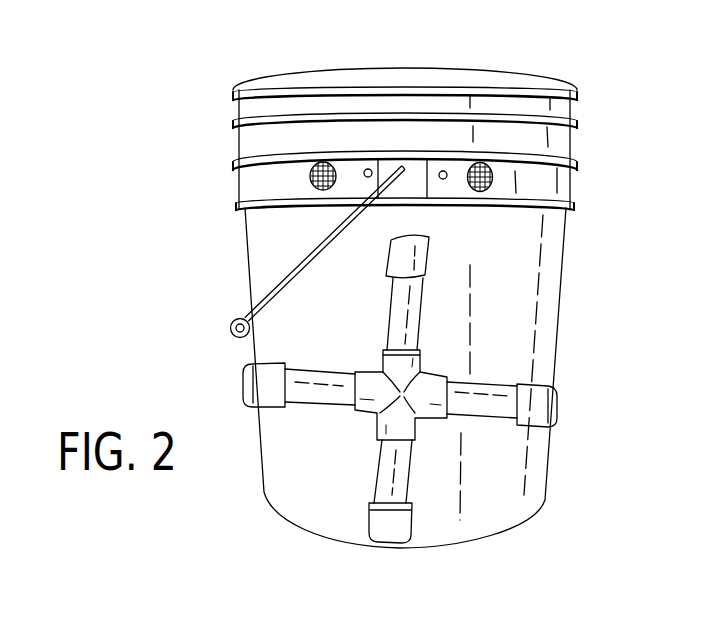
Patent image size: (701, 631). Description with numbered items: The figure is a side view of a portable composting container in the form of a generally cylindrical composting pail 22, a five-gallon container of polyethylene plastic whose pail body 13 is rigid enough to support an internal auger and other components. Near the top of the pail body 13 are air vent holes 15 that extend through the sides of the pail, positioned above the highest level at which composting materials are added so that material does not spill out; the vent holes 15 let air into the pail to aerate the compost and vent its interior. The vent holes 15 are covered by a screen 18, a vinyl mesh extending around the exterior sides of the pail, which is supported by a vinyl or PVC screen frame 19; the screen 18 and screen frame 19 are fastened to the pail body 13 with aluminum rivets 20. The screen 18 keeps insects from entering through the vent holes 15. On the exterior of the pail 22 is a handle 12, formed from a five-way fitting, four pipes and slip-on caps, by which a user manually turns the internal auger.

The handle 12 is at (421, 420).
The pail body 13 is at (290, 492).
The air vent holes 15 is at (323, 162).
The screen 18 is at (401, 176).
The screen frame 19 is at (252, 182).
The aluminum rivets 20 is at (443, 171).
The composting pail 22 is at (197, 140).